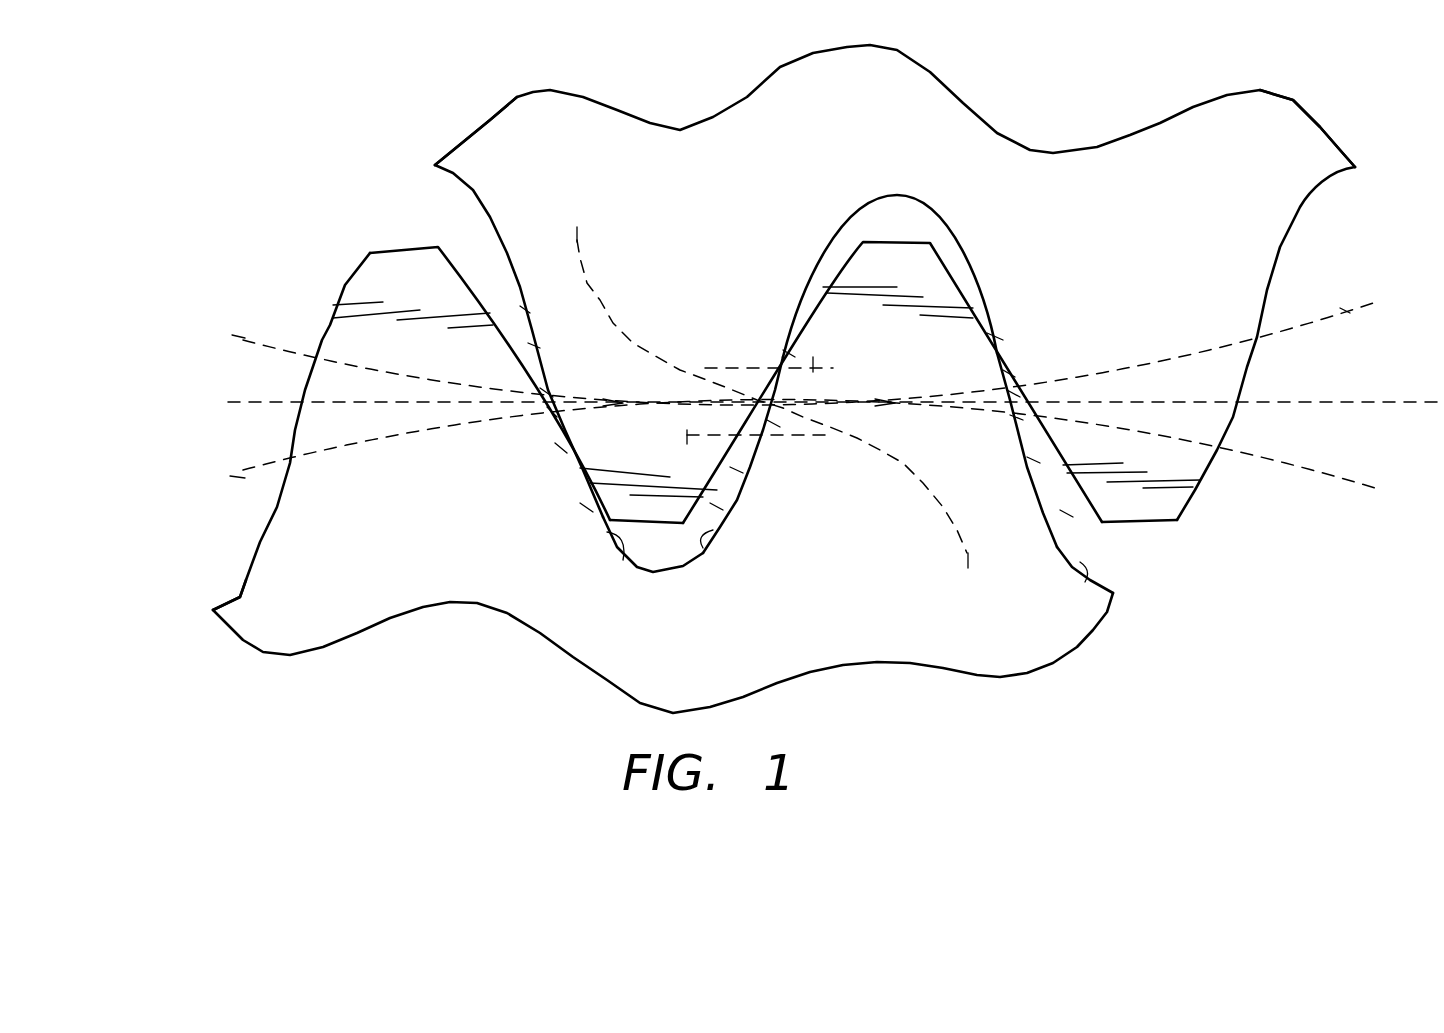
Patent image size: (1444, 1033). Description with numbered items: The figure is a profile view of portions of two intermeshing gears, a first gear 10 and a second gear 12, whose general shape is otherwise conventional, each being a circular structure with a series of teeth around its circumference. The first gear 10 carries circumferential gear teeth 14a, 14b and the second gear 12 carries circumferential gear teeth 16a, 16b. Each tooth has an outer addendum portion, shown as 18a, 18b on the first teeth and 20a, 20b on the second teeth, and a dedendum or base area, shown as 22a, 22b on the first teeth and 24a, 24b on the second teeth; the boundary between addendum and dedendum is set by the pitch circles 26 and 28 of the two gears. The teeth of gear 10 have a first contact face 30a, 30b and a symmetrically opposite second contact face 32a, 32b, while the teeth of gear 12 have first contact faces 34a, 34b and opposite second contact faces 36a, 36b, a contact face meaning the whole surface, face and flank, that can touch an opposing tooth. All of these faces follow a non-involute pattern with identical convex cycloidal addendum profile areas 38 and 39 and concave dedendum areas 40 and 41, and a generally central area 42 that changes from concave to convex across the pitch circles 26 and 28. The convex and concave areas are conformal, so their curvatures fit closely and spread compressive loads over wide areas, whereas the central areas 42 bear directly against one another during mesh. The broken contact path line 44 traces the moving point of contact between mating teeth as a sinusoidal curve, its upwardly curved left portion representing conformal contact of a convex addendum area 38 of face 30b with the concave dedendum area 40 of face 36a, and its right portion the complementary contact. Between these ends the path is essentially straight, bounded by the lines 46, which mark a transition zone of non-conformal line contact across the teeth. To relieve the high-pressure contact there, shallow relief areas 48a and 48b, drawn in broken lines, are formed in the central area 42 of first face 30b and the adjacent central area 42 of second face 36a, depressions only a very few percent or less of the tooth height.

The first gear 10 is at (495, 610).
The second gear 12 is at (781, 66).
The gear tooth 14a is at (373, 290).
The gear tooth 14b is at (935, 262).
The gear tooth 16a is at (610, 513).
The gear tooth 16b is at (1180, 500).
The addendum portion 18a is at (411, 257).
The addendum portion 18b is at (872, 257).
The addendum portion 20a is at (652, 515).
The addendum portion 20b is at (1130, 500).
The dedendum area 22a is at (250, 608).
The dedendum area 22b is at (1030, 607).
The dedendum area 24a is at (512, 150).
The dedendum area 24b is at (1239, 133).
The pitch circle 26 is at (242, 474).
The pitch circle 28 is at (240, 338).
The first contact face 30a is at (303, 387).
The first contact face 30b is at (786, 350).
The second contact face 32a is at (545, 375).
The second contact face 32b is at (1000, 338).
The first contact face 34a is at (525, 338).
The first contact face 34b is at (1040, 440).
The second contact face 36a is at (730, 487).
The second contact face 36b is at (1233, 432).
The convex cycloidal addendum profile area 38 is at (812, 290).
The convex cycloidal addendum profile area 39 is at (553, 462).
The concave dedendum area 40 is at (257, 558).
The concave dedendum area 41 is at (507, 238).
The central area 42 is at (762, 393).
The contact path broken line 44 is at (577, 233).
The lines 46 is at (815, 366).
The relief area 48a is at (785, 394).
The relief area 48b is at (745, 412).